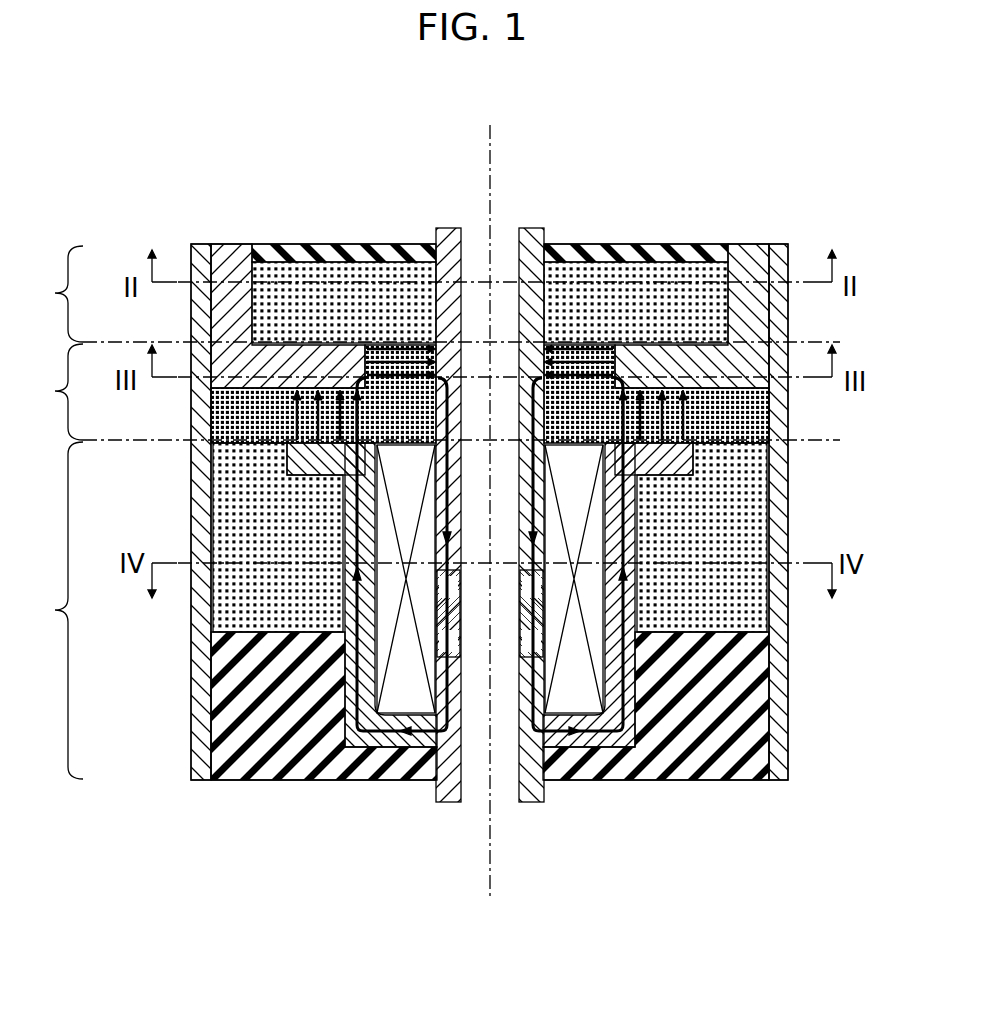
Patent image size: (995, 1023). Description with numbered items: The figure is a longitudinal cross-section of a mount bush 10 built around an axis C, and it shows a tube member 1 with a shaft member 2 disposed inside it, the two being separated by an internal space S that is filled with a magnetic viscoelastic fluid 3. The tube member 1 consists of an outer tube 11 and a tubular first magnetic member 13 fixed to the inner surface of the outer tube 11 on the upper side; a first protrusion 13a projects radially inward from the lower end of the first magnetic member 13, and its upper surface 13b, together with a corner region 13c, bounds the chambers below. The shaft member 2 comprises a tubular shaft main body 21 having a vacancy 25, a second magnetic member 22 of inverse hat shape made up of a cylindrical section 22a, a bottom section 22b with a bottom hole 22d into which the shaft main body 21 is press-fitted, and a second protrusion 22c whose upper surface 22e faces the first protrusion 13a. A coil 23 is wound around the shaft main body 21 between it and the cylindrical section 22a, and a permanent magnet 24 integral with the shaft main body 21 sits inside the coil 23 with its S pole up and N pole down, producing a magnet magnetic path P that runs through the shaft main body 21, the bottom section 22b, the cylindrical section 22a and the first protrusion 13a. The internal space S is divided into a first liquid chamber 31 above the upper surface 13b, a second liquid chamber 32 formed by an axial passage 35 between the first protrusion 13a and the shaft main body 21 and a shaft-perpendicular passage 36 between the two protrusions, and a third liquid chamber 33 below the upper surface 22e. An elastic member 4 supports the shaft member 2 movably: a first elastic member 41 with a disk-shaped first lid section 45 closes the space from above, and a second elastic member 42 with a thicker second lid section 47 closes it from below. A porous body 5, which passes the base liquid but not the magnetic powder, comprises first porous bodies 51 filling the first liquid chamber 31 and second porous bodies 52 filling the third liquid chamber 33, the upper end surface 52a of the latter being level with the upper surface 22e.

The tube member 1 is at (783, 244).
The mount bush 10 is at (752, 197).
The outer tube 11 is at (193, 728).
The first magnetic member 13 is at (222, 244).
The first protrusion 13a is at (343, 355).
The upper surface of first protrusion 13b is at (300, 338).
The stator core corner portion 13c is at (235, 389).
The shaft member 2 is at (530, 229).
The shaft main body 21 is at (530, 790).
The second magnetic member 22 is at (578, 601).
The cylindrical section 22a is at (637, 707).
The bottom section 22b is at (588, 757).
The second protrusion 22c is at (667, 467).
The bottom hole 22d is at (455, 785).
The upper surface of second protrusion 22e is at (757, 343).
The coil 23 is at (393, 703).
The permanent magnet 24 is at (437, 610).
The vacancy 25 is at (472, 248).
The magnetic viscoelastic fluid 3 is at (390, 415).
The first liquid chamber 31 is at (49, 294).
The second liquid chamber 32 is at (49, 392).
The third liquid chamber 33 is at (49, 610).
The axial passage 35 is at (587, 340).
The shaft-perpendicular passage 36 is at (727, 412).
The elastic member 4 is at (324, 529).
The first elastic member 41 is at (277, 252).
The second elastic member 42 is at (287, 775).
The first lid section 45 is at (568, 243).
The second lid section 47 is at (722, 757).
The porous body 5 is at (561, 377).
The first porous body 51 is at (668, 262).
The second porous body 52 is at (770, 478).
The upper end surface of second porous body 52a is at (747, 440).
The axis C is at (492, 150).
The magnet magnetic path P is at (625, 668).
The internal space S is at (695, 313).